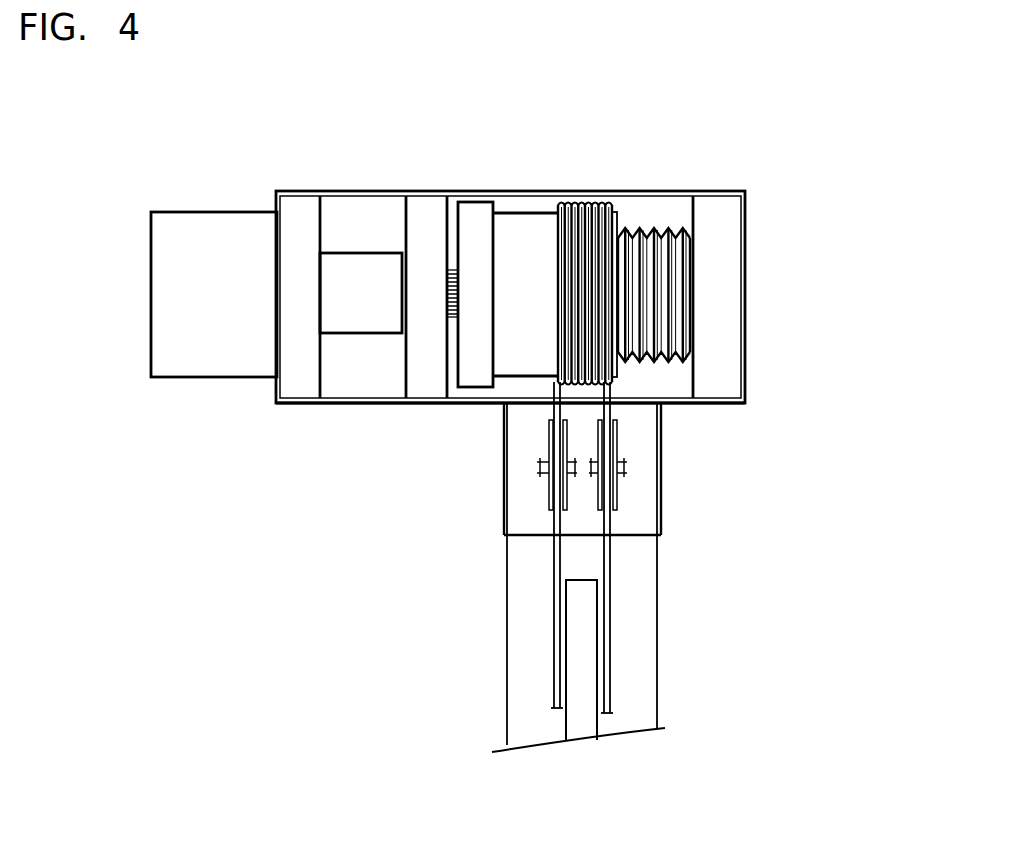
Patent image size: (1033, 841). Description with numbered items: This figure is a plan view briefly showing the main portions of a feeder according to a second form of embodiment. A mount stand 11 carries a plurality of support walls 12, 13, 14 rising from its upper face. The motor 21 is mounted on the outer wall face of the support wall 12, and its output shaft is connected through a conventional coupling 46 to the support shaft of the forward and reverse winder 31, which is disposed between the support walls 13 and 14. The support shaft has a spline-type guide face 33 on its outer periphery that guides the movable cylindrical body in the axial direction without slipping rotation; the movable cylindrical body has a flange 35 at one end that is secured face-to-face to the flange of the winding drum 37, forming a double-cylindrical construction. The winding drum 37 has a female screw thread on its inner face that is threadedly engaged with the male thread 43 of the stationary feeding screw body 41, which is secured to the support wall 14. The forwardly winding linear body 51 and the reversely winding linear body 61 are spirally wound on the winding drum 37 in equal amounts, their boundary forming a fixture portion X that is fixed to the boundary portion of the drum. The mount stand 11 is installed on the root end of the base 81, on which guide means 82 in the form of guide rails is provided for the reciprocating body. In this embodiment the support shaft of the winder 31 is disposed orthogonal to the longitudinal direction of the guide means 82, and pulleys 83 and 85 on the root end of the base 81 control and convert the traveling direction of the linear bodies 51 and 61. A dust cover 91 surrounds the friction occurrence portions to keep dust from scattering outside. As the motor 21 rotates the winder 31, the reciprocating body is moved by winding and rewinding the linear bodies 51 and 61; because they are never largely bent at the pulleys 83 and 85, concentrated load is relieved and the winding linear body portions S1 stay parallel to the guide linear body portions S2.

The mount stand 11 is at (328, 401).
The support wall 12 is at (303, 225).
The support wall 13 is at (422, 245).
The support wall 14 is at (717, 230).
The motor 21 is at (197, 240).
The forward and reverse winder 31 is at (538, 211).
The guide face 33 is at (447, 303).
The flange 35 is at (473, 330).
The winding drum 37 is at (533, 347).
The stationary feeding screw body 41 is at (662, 297).
The thread portion 43 is at (620, 245).
The coupling 46 is at (366, 280).
The forwardly winding linear body 51 is at (612, 250).
The reversely winding linear body 61 is at (555, 634).
The base 81 is at (622, 725).
The guide means 82 is at (573, 667).
The pulley 83 is at (617, 498).
The pulley 85 is at (550, 503).
The dust cover 91 is at (746, 268).
The winding linear body portions S1 is at (598, 212).
The guide linear body portions S2 is at (557, 408).
The fixture portion X is at (552, 297).